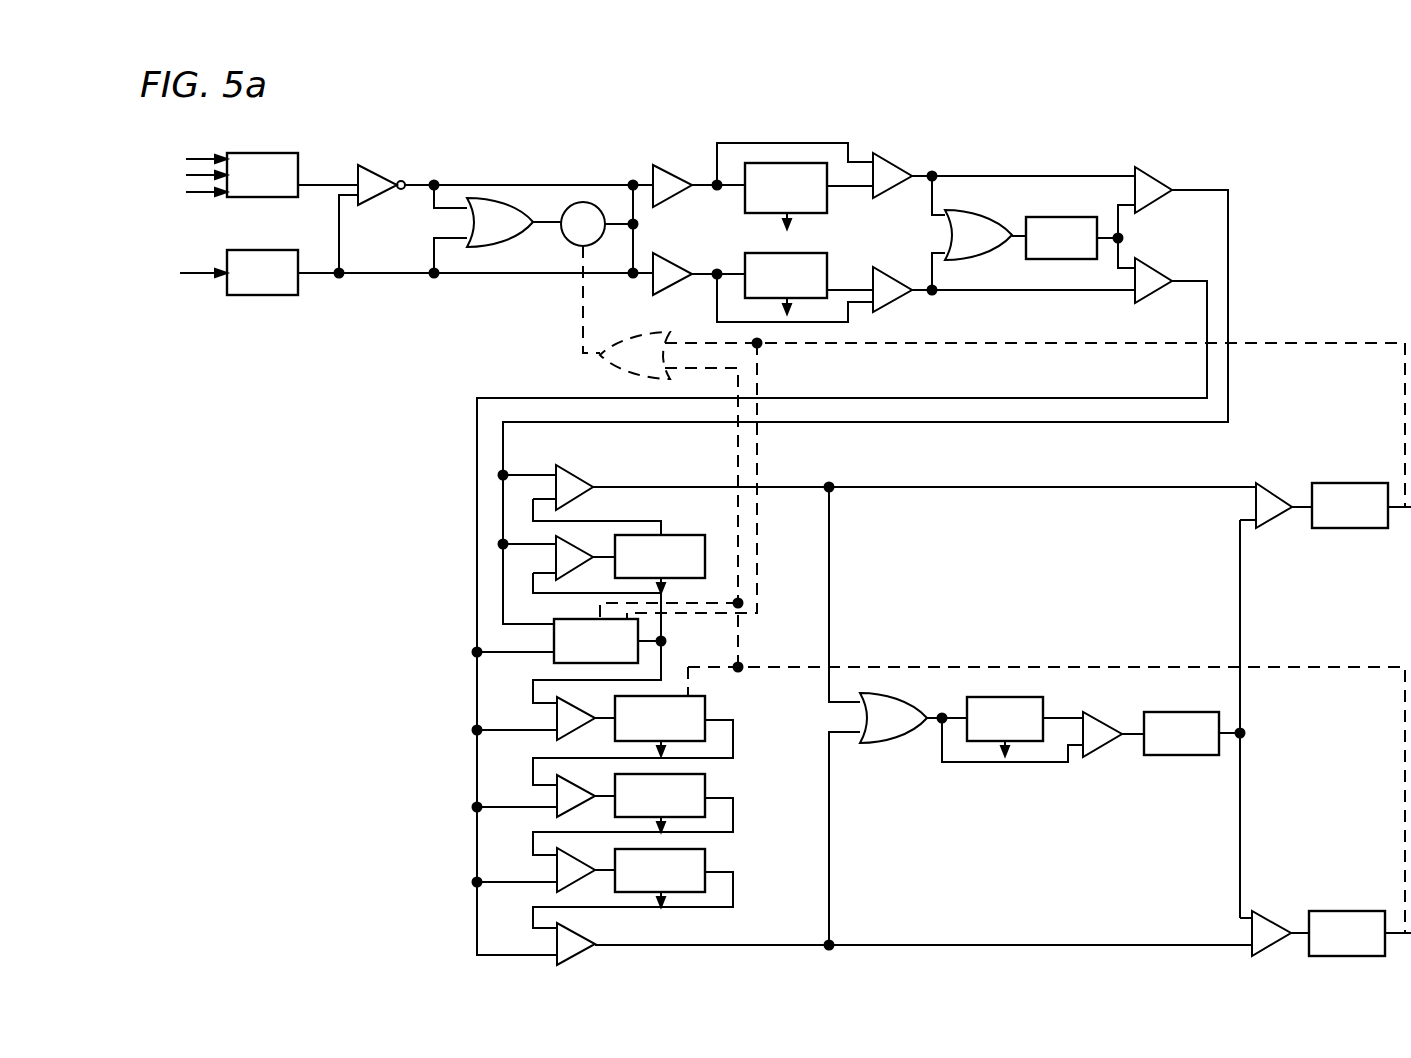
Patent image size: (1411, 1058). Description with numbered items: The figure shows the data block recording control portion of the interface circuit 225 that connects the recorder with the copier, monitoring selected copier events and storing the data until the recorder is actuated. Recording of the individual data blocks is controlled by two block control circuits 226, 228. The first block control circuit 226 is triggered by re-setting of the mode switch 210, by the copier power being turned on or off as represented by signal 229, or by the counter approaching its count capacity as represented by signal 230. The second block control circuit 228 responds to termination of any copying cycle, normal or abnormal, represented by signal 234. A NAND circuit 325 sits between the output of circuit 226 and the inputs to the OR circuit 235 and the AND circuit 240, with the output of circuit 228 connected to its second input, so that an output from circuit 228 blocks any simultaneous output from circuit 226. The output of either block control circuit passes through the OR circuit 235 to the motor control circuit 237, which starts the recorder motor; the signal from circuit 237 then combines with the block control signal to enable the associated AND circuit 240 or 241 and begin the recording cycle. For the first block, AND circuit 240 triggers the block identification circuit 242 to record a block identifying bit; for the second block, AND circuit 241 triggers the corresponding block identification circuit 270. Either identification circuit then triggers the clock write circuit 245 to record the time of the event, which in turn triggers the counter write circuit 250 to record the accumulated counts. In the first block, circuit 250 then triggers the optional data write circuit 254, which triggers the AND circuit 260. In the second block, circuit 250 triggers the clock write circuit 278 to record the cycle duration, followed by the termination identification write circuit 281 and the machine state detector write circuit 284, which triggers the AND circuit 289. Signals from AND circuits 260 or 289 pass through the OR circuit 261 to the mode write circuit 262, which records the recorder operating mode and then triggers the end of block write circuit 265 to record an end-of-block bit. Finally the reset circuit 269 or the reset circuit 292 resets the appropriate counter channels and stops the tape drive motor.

The mode switch 210 is at (204, 157).
The power on/off signal 229 is at (187, 175).
The counter capacity signal 230 is at (199, 193).
The block control circuit 226 is at (279, 152).
The block control circuit 228 is at (275, 249).
The copying cycle termination signal 234 is at (201, 276).
The NAND circuit 325 is at (382, 172).
The OR circuit 235 is at (518, 242).
The motor control circuit 237 is at (584, 200).
The AND circuit 240 is at (676, 174).
The AND circuit 241 is at (672, 291).
The block identification circuit 242 is at (739, 205).
The block identification circuit 270 is at (840, 262).
The clock write circuit 245 is at (1040, 217).
The interface circuit 225 is at (852, 524).
The AND circuit 260 is at (586, 486).
The optional data write circuit 254 is at (694, 536).
The counter write circuit 250 is at (564, 619).
The clock write circuit 278 is at (706, 712).
The termination identification write circuit 281 is at (706, 792).
The machine state detector write circuit 284 is at (706, 866).
The AND circuit 289 is at (586, 937).
The OR circuit 261 is at (886, 744).
The mode write circuit 262 is at (1048, 708).
The end of block write circuit 265 is at (1174, 712).
The reset circuit 269 is at (1354, 483).
The reset circuit 292 is at (1352, 911).